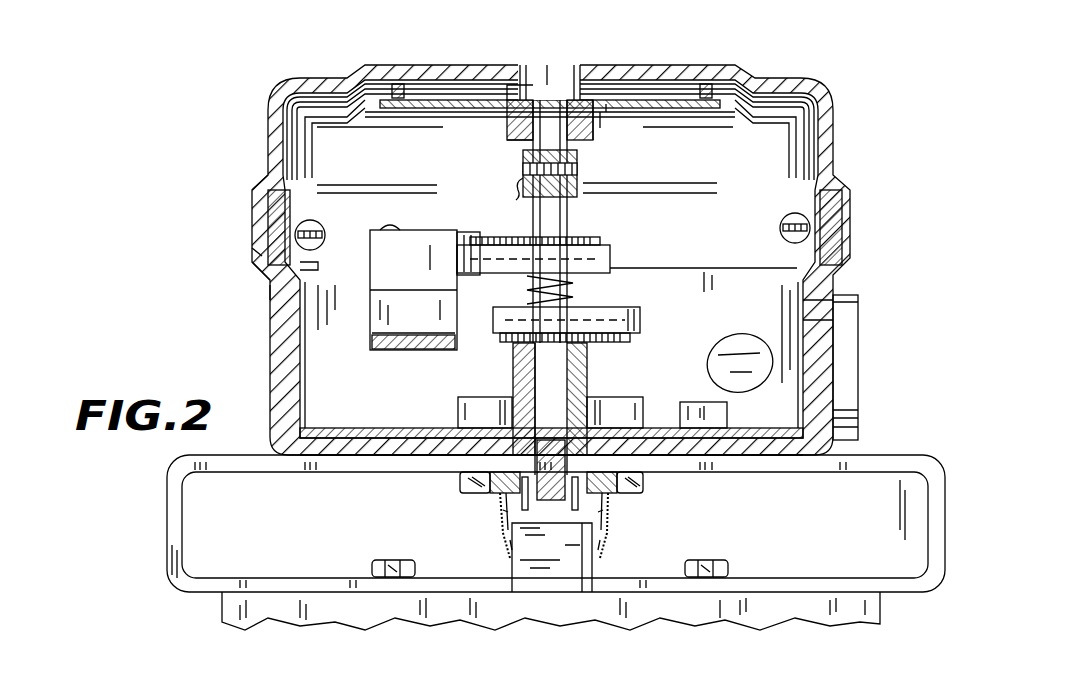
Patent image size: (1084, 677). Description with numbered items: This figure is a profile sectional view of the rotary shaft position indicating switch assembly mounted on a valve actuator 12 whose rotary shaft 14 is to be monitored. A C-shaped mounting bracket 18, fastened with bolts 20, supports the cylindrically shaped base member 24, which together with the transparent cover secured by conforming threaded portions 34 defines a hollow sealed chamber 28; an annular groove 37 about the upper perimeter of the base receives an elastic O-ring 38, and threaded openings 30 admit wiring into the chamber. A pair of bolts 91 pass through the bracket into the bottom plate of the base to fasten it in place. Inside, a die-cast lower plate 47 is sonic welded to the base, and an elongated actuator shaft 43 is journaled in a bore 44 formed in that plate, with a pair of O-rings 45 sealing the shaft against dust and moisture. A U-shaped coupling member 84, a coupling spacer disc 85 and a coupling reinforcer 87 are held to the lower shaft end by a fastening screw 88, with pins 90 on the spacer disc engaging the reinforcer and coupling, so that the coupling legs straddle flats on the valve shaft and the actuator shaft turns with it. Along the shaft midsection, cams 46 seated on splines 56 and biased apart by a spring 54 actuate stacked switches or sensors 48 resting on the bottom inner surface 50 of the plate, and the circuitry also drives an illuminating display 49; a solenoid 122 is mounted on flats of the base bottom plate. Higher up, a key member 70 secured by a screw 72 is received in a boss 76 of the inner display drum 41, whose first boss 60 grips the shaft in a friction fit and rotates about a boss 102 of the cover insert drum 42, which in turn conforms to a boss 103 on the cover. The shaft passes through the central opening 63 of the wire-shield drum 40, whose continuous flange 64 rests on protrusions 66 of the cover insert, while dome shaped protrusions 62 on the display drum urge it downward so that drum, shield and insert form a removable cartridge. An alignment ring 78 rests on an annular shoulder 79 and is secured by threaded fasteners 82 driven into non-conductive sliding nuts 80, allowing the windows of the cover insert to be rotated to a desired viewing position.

The valve actuator 12 is at (227, 605).
The rotary shaft 14 is at (583, 572).
The C-shaped mounting bracket 18 is at (167, 512).
The bolts 20 is at (397, 560).
The base member 24 is at (820, 307).
The sealed chamber 28 is at (725, 313).
The threaded openings 30 is at (857, 400).
The threaded portions 34 is at (260, 190).
The annular groove 37 is at (267, 277).
The O-ring 38 is at (260, 255).
The wire-shield drum 40 is at (745, 117).
The inner display drum 41 is at (773, 110).
The cover insert drum 42 is at (805, 103).
The actuator shaft 43 is at (568, 216).
The bore 44 is at (583, 368).
The O-rings 45 is at (515, 370).
The actuating elements 46 is at (640, 320).
The lower plate 47 is at (343, 456).
The sensor 48 is at (393, 271).
The electrical illuminating display 49 is at (280, 347).
The bottom inner surface 50 is at (345, 427).
The spring 54 is at (573, 287).
The spline 56 is at (597, 245).
The first boss 60 is at (520, 165).
The dome shaped protrusions 62 is at (398, 97).
The central opening 63 is at (640, 108).
The continuous flange 64 is at (795, 182).
The protrusions 66 is at (307, 195).
The key member 70 is at (515, 125).
The screw 72 is at (520, 185).
The boss 76 is at (507, 117).
The alignment ring 78 is at (308, 265).
The annular shoulder 79 is at (270, 303).
The sliding nuts 80 is at (313, 230).
The threaded fasteners 82 is at (260, 230).
The U-shaped coupling member 84 is at (500, 547).
The coupling spacer disc 85 is at (492, 493).
The coupling reinforcer 87 is at (500, 517).
The fastening screw 88 is at (557, 513).
The pins 90 is at (608, 513).
The bolts 91 is at (647, 478).
The boss 102 is at (522, 90).
The boss 103 is at (547, 83).
The solenoid 122 is at (684, 400).